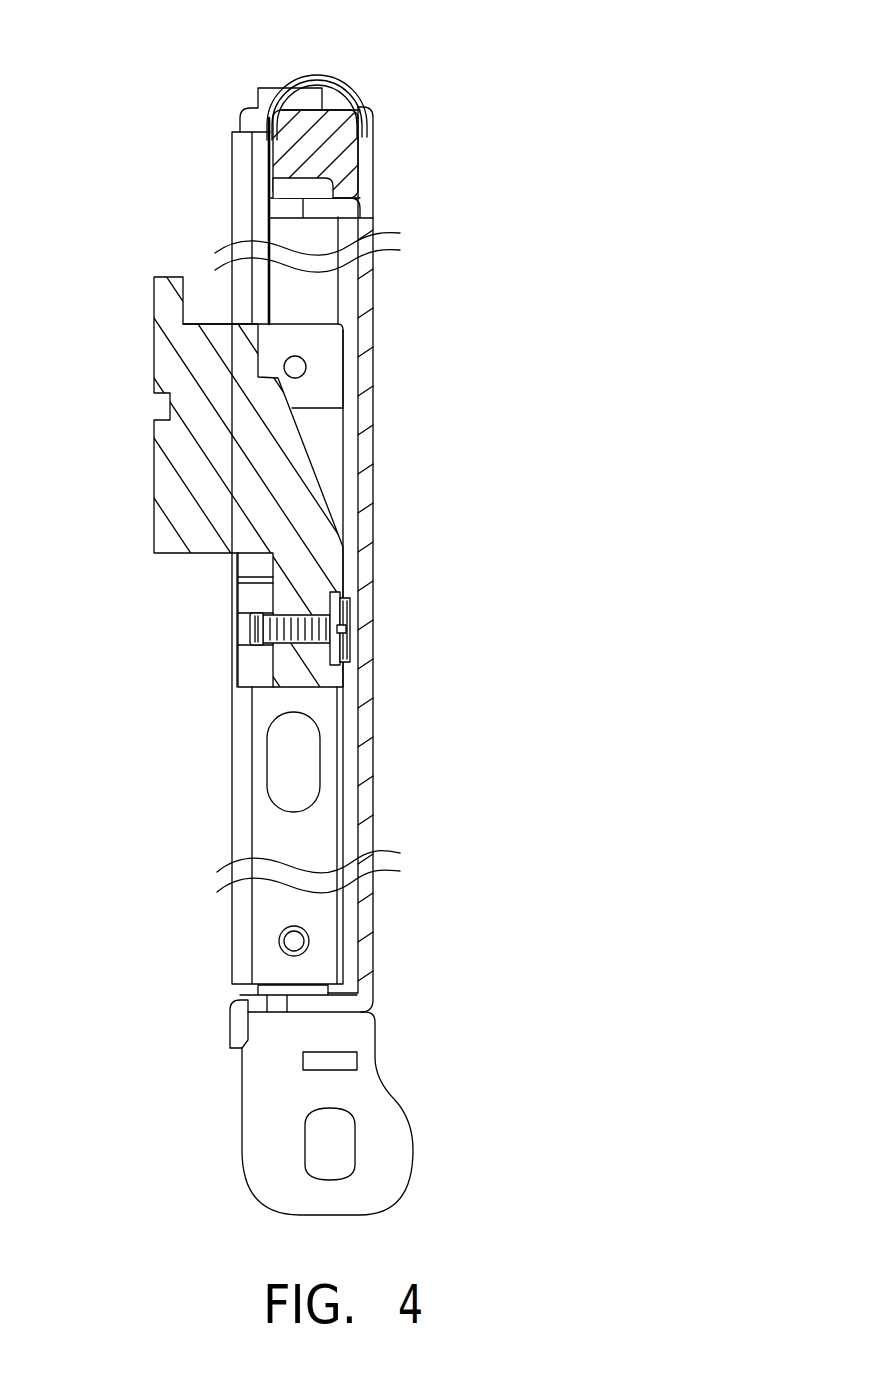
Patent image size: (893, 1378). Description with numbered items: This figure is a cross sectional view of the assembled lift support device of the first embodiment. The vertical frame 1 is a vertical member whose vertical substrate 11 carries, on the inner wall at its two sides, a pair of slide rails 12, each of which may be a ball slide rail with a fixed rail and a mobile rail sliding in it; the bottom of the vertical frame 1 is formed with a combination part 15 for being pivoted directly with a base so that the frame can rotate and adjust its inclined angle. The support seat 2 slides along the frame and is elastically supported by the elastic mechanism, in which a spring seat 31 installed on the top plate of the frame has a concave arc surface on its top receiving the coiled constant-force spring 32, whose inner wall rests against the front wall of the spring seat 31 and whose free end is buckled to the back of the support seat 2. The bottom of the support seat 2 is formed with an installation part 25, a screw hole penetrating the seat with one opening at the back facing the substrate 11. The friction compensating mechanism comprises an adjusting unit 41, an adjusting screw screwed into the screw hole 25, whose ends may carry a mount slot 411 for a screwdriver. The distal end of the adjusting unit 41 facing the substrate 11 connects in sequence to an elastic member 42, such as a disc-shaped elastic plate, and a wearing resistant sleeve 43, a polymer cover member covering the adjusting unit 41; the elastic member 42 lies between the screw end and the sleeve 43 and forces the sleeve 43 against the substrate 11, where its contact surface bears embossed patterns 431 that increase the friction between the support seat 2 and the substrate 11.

The vertical frame 1 is at (377, 297).
The vertical substrate 11 is at (370, 373).
The slide rail 12 is at (242, 808).
The combination part 15 is at (387, 1123).
The support seat 2 is at (170, 470).
The installation part 25 is at (263, 595).
The spring seat 31 is at (347, 152).
The constant-force spring 32 is at (330, 73).
The adjusting unit 41 is at (255, 620).
The mount slot 411 is at (250, 630).
The elastic member 42 is at (350, 643).
The wearing resistant sleeve 43 is at (350, 603).
The embossed patterns 431 is at (350, 652).